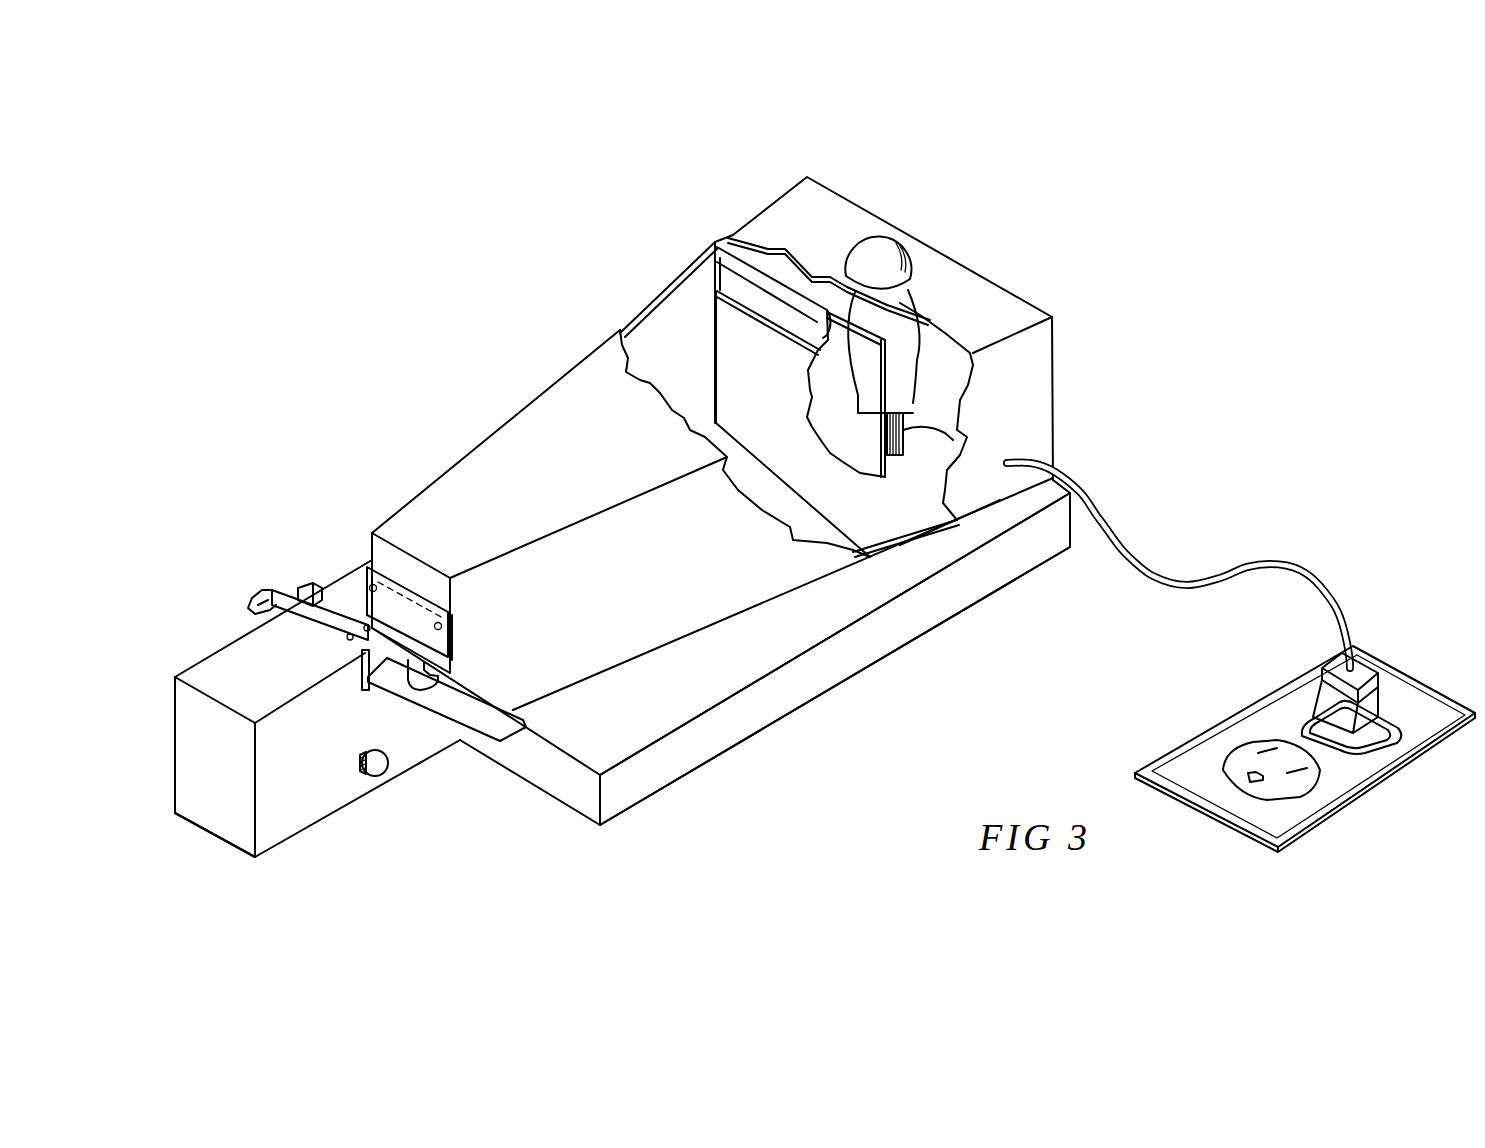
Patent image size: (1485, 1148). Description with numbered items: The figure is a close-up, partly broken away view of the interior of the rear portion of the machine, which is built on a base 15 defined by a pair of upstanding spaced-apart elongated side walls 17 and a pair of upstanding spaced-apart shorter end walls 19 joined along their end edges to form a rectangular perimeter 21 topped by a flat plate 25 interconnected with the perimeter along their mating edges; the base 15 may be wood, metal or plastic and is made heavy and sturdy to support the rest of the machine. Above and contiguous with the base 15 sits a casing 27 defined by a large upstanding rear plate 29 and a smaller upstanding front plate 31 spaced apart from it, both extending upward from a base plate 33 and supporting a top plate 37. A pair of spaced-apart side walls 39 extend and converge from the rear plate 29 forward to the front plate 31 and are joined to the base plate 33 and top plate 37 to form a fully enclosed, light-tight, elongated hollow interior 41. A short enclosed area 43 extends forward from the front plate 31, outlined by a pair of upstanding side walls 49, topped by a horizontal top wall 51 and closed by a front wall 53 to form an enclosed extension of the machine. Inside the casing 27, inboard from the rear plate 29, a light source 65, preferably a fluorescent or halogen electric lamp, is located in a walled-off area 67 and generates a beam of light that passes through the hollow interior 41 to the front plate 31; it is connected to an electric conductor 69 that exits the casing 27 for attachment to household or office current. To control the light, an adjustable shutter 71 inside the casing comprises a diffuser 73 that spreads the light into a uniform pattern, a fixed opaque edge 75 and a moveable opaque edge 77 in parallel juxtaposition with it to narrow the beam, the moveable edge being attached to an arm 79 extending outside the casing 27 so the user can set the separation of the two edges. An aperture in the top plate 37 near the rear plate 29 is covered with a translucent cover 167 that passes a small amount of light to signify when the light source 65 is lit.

The base 15 is at (807, 698).
The side walls 17 is at (747, 715).
The end walls 19 is at (552, 777).
The rectangular perimeter 21 is at (1000, 537).
The flat plate 25 is at (830, 612).
The casing 27 is at (779, 328).
The rear plate 29 is at (970, 403).
The front plate 31 is at (423, 580).
The base plate 33 is at (603, 675).
The top plate 37 is at (503, 457).
The side walls 39 is at (685, 362).
The hollow interior 41 is at (868, 560).
The enclosed area 43 is at (297, 767).
The side walls 49 is at (282, 808).
The top wall 51 is at (243, 660).
The front wall 53 is at (218, 813).
The light source 65 is at (970, 312).
The walled-off area 67 is at (953, 560).
The electric conductor 69 is at (1193, 580).
The adjustable shutter 71 is at (722, 242).
The diffuser 73 is at (847, 393).
The fixed opaque edge 75 is at (772, 322).
The moveable opaque edge 77 is at (712, 283).
The arm 79 is at (776, 282).
The translucent cover 167 is at (913, 277).